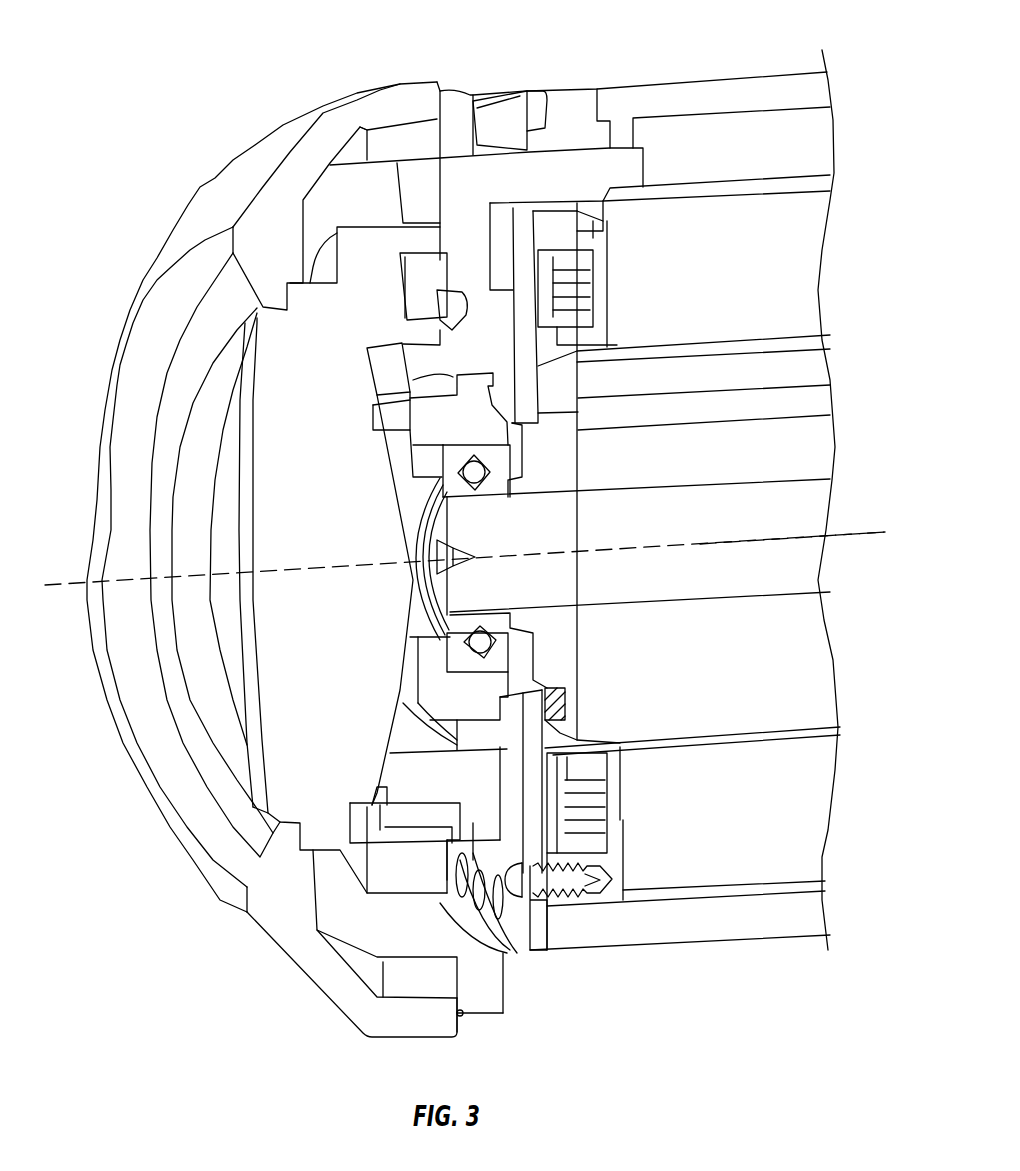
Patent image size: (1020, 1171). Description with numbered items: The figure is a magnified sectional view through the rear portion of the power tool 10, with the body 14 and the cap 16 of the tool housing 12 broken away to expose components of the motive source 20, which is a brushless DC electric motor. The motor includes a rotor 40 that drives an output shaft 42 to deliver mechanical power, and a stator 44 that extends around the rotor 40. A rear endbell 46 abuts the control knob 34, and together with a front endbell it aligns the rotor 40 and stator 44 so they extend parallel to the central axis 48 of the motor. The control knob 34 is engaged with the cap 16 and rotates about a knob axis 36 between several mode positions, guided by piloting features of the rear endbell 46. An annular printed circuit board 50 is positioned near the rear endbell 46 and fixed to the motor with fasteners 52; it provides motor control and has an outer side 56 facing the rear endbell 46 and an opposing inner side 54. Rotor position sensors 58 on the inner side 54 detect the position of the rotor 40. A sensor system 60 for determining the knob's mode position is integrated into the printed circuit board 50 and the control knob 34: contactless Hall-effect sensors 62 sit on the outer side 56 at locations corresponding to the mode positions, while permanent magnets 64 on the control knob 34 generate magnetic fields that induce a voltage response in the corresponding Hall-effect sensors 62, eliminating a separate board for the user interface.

The power tool 10 is at (165, 57).
The tool housing 12 is at (638, 55).
The body 14 is at (743, 93).
The cap 16 is at (360, 100).
The motive source 20 is at (850, 137).
The control knob 34 is at (273, 437).
The knob axis 36 is at (73, 590).
The rotor 40 is at (805, 370).
The output shaft 42 is at (807, 503).
The stator 44 is at (787, 270).
The rear endbell 46 is at (463, 170).
The central axis 48 is at (845, 533).
The printed circuit board 50 is at (527, 220).
The fasteners 52 is at (583, 878).
The inner side 54 is at (537, 927).
The outer side 56 is at (497, 953).
The rotor position sensors 58 is at (577, 712).
The sensor system 60 is at (421, 178).
The Hall-effect sensors 62 is at (400, 347).
The permanent magnets 64 is at (427, 280).